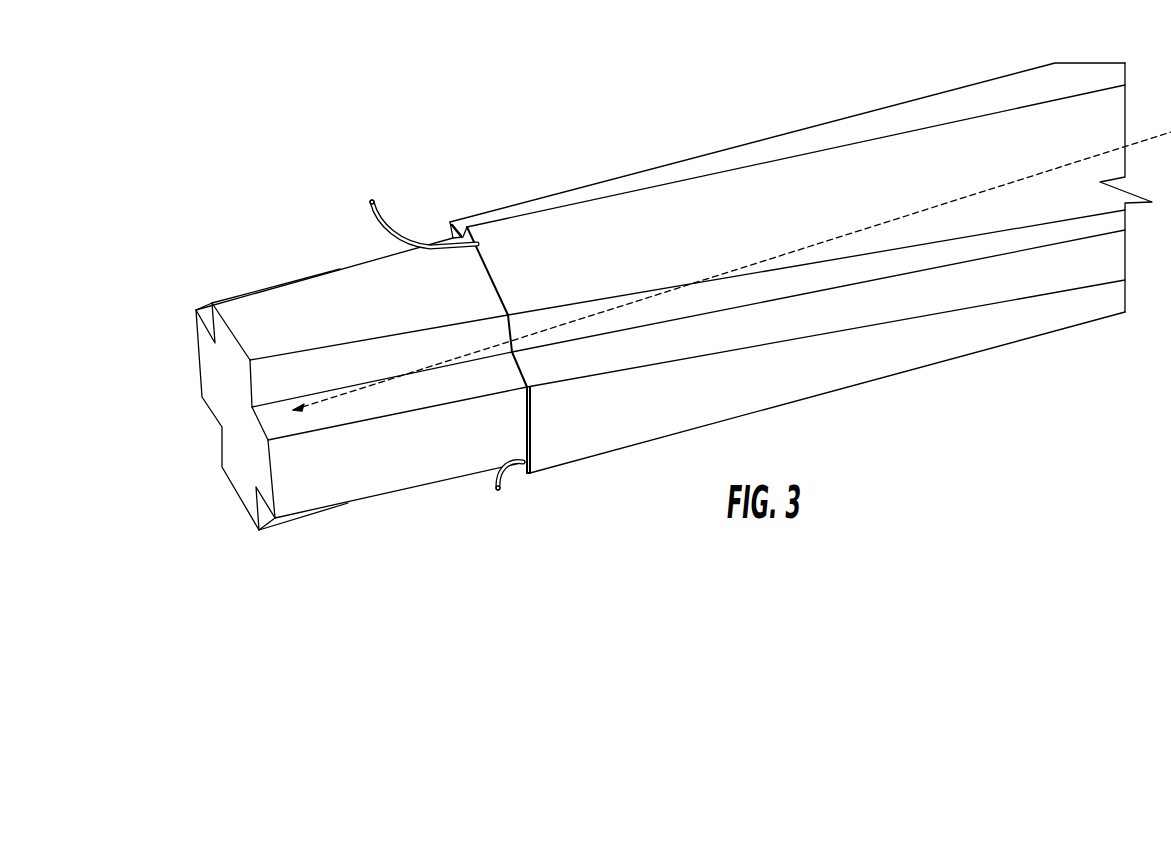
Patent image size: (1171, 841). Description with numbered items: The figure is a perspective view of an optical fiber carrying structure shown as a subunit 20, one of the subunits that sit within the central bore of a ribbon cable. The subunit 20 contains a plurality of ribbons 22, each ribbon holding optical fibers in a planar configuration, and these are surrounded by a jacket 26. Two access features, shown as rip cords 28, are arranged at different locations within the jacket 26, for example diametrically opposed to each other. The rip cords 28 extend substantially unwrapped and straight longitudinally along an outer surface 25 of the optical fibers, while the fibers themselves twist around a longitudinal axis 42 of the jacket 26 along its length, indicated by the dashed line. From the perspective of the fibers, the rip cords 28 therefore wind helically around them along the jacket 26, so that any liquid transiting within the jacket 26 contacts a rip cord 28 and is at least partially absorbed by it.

The subunit 20 is at (302, 221).
The ribbons 22 is at (194, 334).
The outer surface 25 is at (285, 310).
The jacket 26 is at (778, 167).
The rip cords 28 is at (385, 212).
The longitudinal axis 42 is at (1000, 187).